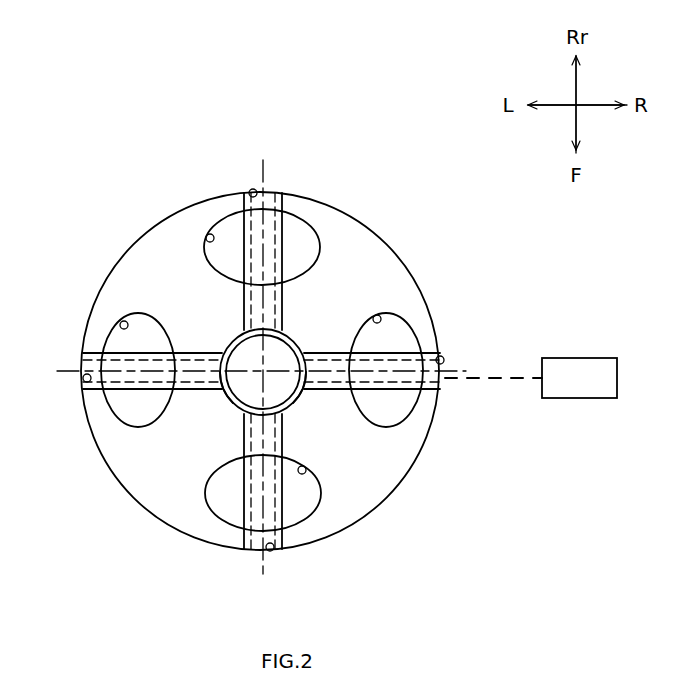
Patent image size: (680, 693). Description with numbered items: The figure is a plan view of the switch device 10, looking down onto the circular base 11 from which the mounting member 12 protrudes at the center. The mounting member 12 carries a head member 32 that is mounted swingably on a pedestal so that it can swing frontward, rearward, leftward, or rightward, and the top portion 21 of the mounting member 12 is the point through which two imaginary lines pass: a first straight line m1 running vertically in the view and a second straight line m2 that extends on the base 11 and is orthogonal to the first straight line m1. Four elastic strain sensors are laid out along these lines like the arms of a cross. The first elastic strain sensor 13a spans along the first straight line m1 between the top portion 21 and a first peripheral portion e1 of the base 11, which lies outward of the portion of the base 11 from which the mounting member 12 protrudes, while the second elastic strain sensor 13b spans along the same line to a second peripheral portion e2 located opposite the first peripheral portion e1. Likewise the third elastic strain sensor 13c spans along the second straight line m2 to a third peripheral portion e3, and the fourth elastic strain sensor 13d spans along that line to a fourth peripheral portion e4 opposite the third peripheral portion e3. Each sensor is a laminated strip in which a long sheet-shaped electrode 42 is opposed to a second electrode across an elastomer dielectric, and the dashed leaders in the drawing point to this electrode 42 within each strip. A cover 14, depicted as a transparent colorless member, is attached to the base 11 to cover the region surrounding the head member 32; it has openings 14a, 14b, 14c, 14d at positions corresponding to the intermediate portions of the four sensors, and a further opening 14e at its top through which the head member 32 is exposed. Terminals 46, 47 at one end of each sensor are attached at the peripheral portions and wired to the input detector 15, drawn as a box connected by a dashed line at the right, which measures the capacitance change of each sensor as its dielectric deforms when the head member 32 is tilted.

The switch device 10 is at (80, 138).
The base 11 is at (354, 248).
The mounting member 12 is at (302, 339).
The first elastic strain sensor 13a is at (290, 500).
The second elastic strain sensor 13b is at (238, 238).
The third elastic strain sensor 13c is at (135, 396).
The fourth elastic strain sensor 13d is at (401, 350).
The cover 14 is at (397, 459).
The opening 14a is at (304, 470).
The opening 14b is at (205, 238).
The opening 14c is at (120, 322).
The opening 14d is at (377, 315).
The opening 14e is at (228, 406).
The input detector 15 is at (593, 358).
The top portion 21 is at (242, 351).
The head member 32 is at (298, 402).
The electrode 42 is at (278, 238).
The terminal 46 is at (500, 384).
The terminal 47 is at (508, 414).
The first peripheral portion e1 is at (271, 552).
The second peripheral portion e2 is at (250, 189).
The third peripheral portion e3 is at (84, 382).
The fourth peripheral portion e4 is at (444, 360).
The first straight line m1 is at (265, 168).
The second straight line m2 is at (62, 370).